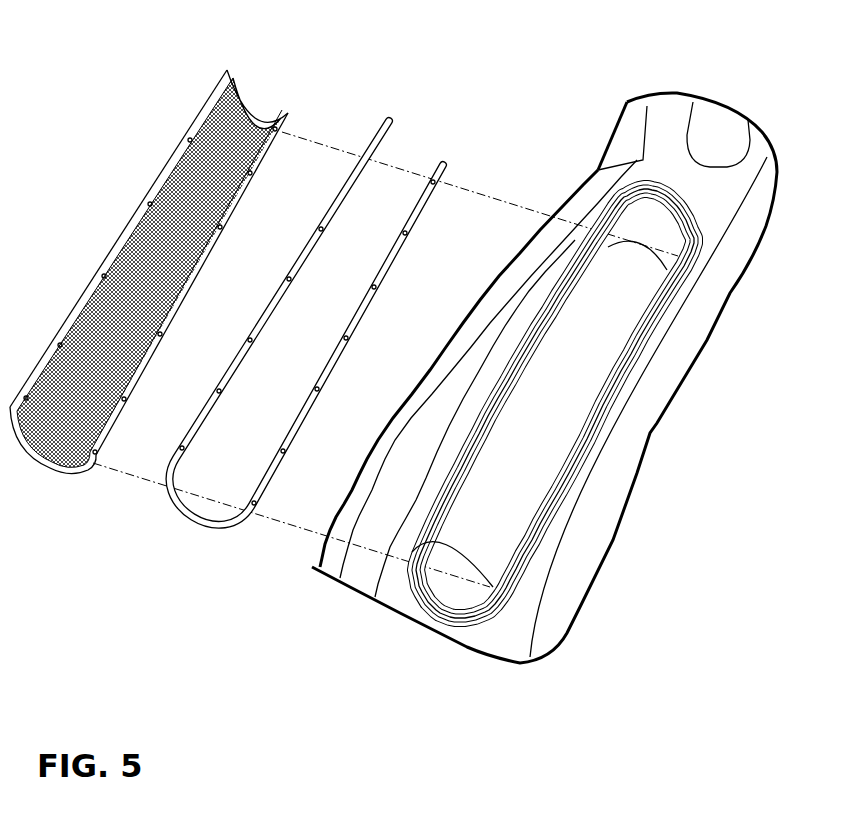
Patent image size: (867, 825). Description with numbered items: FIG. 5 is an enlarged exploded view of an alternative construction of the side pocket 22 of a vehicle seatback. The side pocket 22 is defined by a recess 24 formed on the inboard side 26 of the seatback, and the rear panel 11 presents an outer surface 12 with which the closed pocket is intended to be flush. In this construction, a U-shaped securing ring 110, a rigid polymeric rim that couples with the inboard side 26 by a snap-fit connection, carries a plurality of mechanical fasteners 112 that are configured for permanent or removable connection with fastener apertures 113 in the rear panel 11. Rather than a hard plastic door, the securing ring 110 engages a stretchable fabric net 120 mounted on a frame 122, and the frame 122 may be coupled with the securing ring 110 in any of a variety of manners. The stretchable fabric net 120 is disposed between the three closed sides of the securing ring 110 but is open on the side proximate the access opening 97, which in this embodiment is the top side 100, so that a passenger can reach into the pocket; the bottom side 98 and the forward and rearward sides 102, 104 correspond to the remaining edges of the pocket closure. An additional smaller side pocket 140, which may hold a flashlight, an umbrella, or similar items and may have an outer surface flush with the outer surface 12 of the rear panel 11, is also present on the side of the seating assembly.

The rear panel 11 is at (702, 312).
The outer surface 12 is at (597, 538).
The side pocket 22 is at (421, 76).
The recess 24 is at (574, 383).
The inboard side 26 is at (705, 182).
The access opening 97 is at (240, 107).
The bottom side 98 is at (48, 463).
The top side 100 is at (263, 115).
The forward side 102 is at (137, 198).
The rearward side 104 is at (128, 370).
The U-shaped securing ring 110 is at (395, 130).
The mechanical fasteners 112 is at (376, 285).
The fastener apertures 113 is at (570, 303).
The stretchable fabric net 120 is at (82, 292).
The frame 122 is at (13, 427).
The smaller side pocket 140 is at (707, 128).